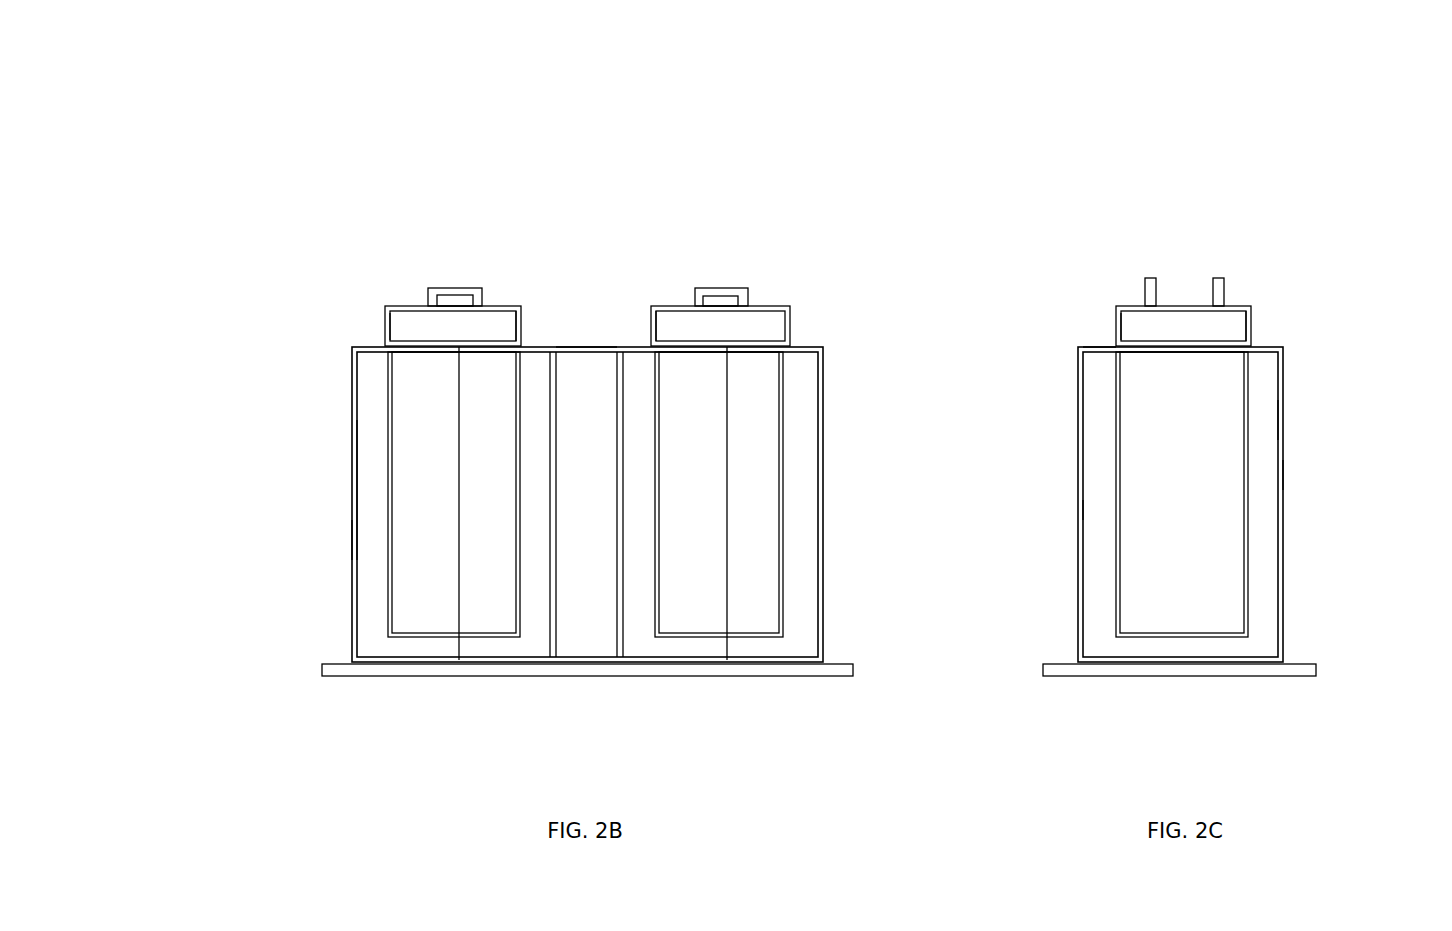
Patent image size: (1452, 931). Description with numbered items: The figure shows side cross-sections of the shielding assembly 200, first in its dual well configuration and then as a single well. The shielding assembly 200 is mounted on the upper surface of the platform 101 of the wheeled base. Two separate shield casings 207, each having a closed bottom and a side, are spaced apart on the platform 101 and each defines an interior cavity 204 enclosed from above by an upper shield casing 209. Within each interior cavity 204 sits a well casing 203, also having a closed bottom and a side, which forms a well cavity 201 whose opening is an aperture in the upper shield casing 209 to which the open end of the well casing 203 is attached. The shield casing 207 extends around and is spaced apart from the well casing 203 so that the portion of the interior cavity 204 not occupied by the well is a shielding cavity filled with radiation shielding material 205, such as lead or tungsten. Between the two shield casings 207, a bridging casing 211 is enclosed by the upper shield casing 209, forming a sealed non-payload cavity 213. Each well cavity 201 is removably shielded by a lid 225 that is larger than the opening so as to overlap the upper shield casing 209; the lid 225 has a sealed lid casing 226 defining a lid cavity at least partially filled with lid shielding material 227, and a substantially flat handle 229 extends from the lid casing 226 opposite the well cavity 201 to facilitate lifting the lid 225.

In FIG. 2B, the shielding assembly 200 is at (233, 122).
In FIG. 2B, the platform 101 is at (344, 670).
In FIG. 2C, the platform 101 is at (1300, 676).
In FIG. 2B, the well cavity 201 is at (898, 448).
In FIG. 2C, the well cavity 201 is at (1158, 448).
In FIG. 2B, the well casing 203 is at (393, 456).
In FIG. 2C, the well casing 203 is at (1247, 375).
In FIG. 2B, the interior cavity 204 is at (368, 492).
In FIG. 2C, the interior cavity 204 is at (1263, 422).
In FIG. 2B, the radiation shielding material 205 is at (368, 543).
In FIG. 2C, the radiation shielding material 205 is at (1257, 476).
In FIG. 2B, the shield casing 207 is at (353, 636).
In FIG. 2C, the shield casing 207 is at (1285, 600).
In FIG. 2B, the upper shield casing 209 is at (587, 346).
In FIG. 2C, the upper shield casing 209 is at (1080, 348).
In FIG. 2B, the bridging casing 211 is at (727, 613).
In FIG. 2B, the non-payload cavity 213 is at (583, 618).
In FIG. 2B, the lid 225 is at (905, 200).
In FIG. 2C, the lid 225 is at (1116, 308).
In FIG. 2B, the lid casing 226 is at (385, 316).
In FIG. 2C, the lid casing 226 is at (1122, 325).
In FIG. 2B, the lid shielding material 227 is at (680, 323).
In FIG. 2C, the lid shielding material 227 is at (1233, 323).
In FIG. 2B, the handle 229 is at (459, 288).
In FIG. 2C, the handle 229 is at (1185, 247).